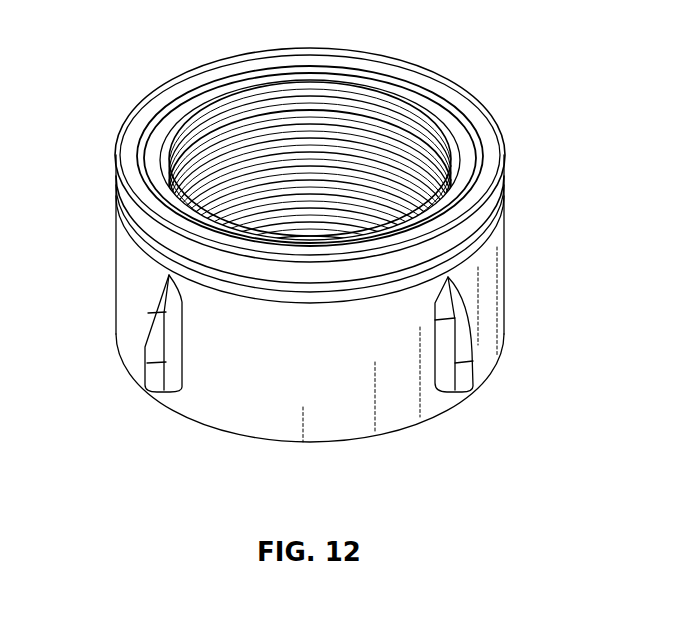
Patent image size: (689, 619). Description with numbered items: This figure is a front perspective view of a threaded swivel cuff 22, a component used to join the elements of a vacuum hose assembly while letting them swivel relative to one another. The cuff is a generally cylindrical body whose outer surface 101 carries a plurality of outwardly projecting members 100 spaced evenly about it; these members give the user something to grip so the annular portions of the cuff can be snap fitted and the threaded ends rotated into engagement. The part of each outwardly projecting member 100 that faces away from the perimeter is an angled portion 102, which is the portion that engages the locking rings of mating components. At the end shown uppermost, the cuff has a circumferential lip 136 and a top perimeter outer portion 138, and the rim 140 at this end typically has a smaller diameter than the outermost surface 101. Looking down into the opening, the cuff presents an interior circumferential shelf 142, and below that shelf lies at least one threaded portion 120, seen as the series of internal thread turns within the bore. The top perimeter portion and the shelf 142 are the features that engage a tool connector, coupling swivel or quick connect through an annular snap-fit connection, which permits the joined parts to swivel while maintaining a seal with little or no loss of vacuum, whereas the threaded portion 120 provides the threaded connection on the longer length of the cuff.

The threaded swivel cuff 22 is at (192, 468).
The outwardly projecting members 100 is at (153, 377).
The outer surface 101 is at (417, 410).
The angled portion 102 is at (165, 300).
The threaded portion 120 is at (343, 172).
The circumferential lip 136 is at (490, 227).
The top perimeter outer portion 138 is at (490, 191).
The rim 140 is at (478, 110).
The interior circumferential shelf 142 is at (430, 136).